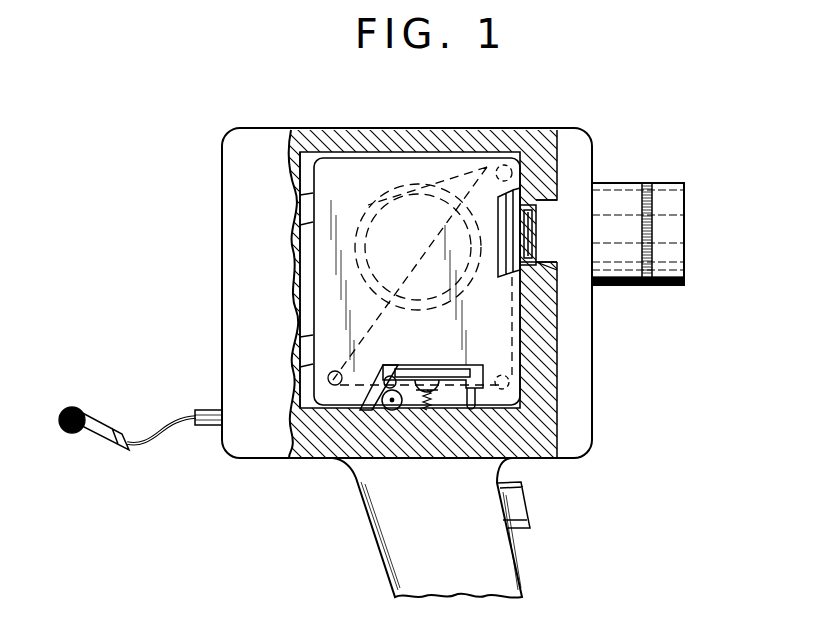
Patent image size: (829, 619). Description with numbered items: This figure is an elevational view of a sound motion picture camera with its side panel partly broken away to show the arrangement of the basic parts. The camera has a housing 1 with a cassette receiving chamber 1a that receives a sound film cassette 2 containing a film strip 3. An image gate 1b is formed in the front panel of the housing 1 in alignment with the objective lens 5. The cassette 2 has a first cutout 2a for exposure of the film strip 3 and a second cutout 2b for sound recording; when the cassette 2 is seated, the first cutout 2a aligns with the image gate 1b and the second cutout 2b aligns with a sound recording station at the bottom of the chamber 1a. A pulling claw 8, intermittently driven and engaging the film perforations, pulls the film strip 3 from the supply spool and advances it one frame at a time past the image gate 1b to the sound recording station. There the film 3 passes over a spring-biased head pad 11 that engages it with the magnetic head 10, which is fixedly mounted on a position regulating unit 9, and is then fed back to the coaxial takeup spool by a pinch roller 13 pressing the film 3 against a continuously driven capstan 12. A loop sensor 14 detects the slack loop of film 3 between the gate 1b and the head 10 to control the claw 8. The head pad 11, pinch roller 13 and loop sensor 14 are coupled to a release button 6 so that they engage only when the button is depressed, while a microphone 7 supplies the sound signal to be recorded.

The housing 1 is at (250, 181).
The cassette receiving chamber 1a is at (308, 172).
The image gate 1b is at (553, 218).
The sound film cassette 2 is at (329, 191).
The first cutout 2a is at (503, 218).
The second cutout 2b is at (483, 375).
The film strip 3 is at (527, 270).
The objective lens 5 is at (628, 202).
The release button 6 is at (518, 512).
The microphone 7 is at (112, 432).
The pulling claw 8 is at (534, 240).
The position regulating unit 9 is at (424, 367).
The magnetic head 10 is at (425, 380).
The head pad 11 is at (427, 410).
The driving capstan 12 is at (384, 378).
The pinch roller 13 is at (391, 405).
The loop sensor 14 is at (471, 410).